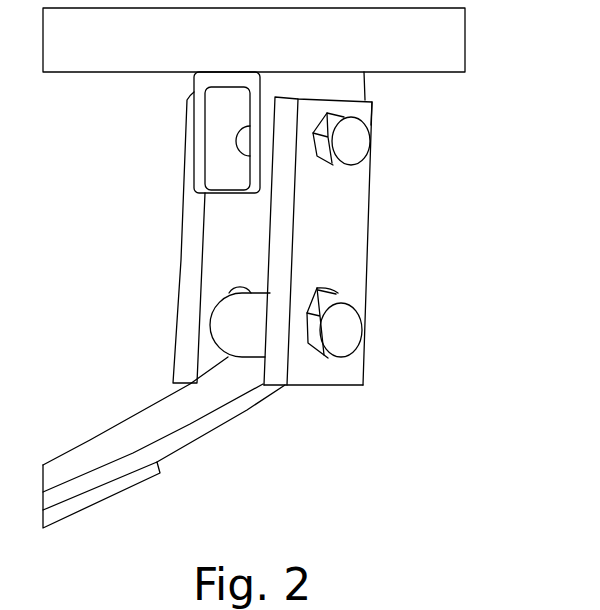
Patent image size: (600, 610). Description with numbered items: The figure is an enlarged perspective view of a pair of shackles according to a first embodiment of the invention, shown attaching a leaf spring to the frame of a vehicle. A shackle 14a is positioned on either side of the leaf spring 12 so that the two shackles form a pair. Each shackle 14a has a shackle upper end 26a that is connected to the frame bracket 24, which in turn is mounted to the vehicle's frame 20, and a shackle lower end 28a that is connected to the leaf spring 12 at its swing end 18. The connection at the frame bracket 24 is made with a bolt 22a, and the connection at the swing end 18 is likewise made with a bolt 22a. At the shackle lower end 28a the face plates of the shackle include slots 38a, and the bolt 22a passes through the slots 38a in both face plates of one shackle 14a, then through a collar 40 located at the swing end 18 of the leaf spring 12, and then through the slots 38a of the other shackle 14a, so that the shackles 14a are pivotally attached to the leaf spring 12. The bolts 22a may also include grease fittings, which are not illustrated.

The leaf spring 12 is at (132, 498).
The swing end 18 is at (223, 412).
The vehicle's frame 20 is at (157, 35).
The frame bracket 24 is at (363, 88).
The shackle 14a is at (395, 241).
The bolt 22a is at (352, 143).
The shackle upper end 26a is at (373, 112).
The slot 38a is at (338, 293).
The shackle lower end 28a is at (365, 375).
The collar 40 is at (242, 332).